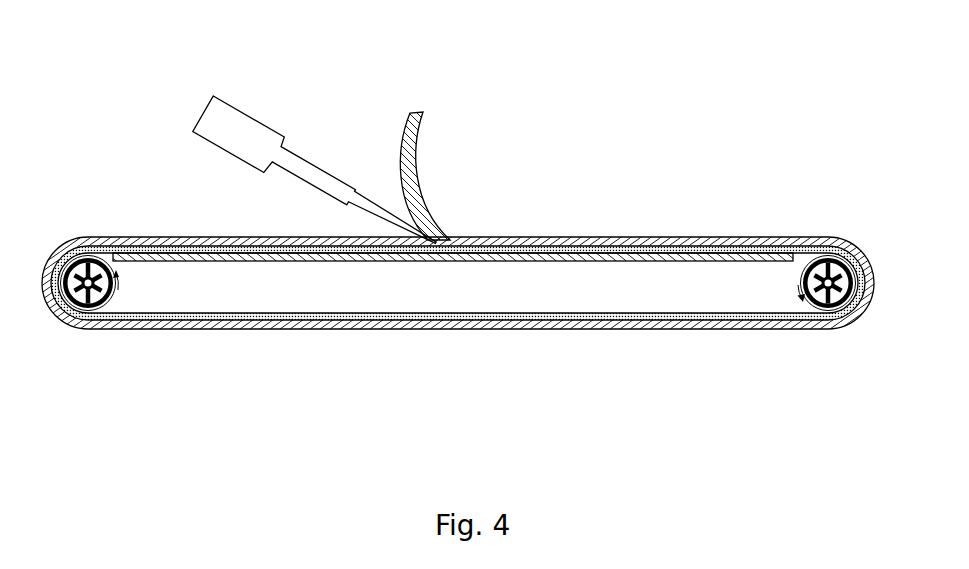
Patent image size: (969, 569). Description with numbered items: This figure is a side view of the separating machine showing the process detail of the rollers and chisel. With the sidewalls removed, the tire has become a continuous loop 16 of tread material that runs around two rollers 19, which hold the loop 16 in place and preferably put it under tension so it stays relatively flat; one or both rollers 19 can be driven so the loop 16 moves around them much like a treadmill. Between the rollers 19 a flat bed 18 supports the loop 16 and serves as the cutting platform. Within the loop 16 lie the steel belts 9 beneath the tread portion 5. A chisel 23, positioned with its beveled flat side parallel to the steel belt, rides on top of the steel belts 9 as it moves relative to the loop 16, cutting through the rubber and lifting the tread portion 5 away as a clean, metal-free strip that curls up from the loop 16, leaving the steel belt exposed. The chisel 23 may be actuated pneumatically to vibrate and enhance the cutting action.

The tread portion 5 is at (427, 199).
The steel belts 9 is at (207, 242).
The continuous loop 16 is at (855, 242).
The flat bed 18 is at (467, 265).
The rollers 19 is at (123, 285).
The chisel 23 is at (232, 122).